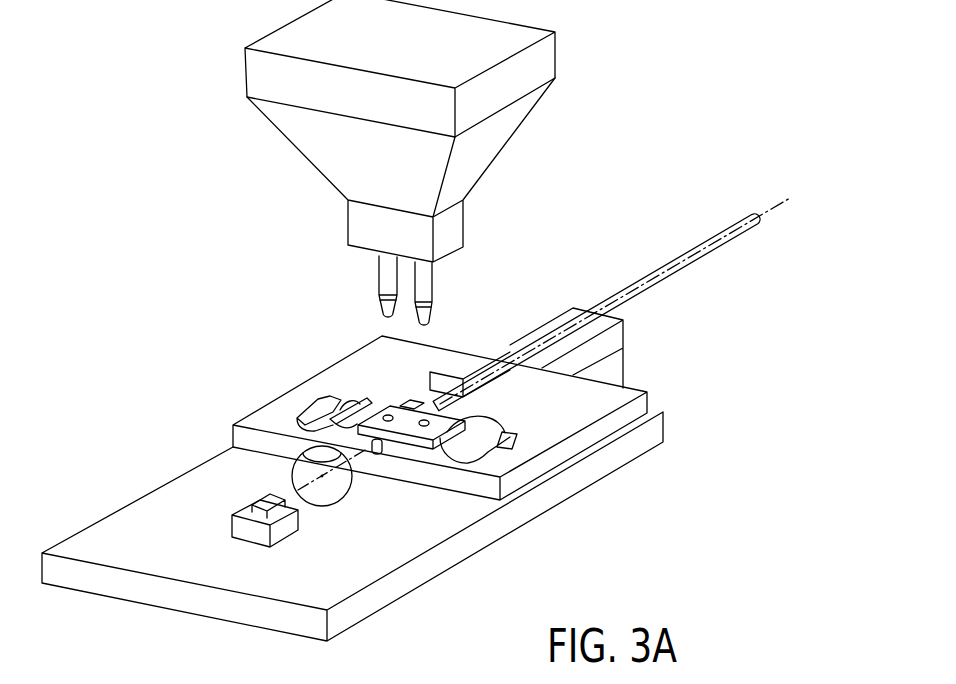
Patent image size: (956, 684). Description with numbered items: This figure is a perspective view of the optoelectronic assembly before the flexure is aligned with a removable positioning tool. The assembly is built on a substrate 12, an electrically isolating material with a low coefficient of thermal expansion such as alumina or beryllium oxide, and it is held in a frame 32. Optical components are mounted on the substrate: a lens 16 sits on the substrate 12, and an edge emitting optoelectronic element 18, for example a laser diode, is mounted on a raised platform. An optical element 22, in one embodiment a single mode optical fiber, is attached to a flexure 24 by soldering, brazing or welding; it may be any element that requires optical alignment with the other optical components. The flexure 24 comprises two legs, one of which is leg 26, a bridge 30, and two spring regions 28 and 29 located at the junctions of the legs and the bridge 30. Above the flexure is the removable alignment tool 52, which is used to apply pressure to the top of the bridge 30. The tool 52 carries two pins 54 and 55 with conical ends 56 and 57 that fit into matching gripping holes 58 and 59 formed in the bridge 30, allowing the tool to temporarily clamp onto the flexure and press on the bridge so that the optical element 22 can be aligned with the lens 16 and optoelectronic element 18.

The substrate 12 is at (603, 463).
The lens 16 is at (327, 497).
The edge emitting optoelectronic element 18 is at (260, 493).
The optical element 22 is at (718, 245).
The flexure 24 is at (405, 447).
The leg 26 is at (330, 410).
The spring region 28 is at (367, 392).
The spring region 29 is at (438, 445).
The bridge 30 is at (410, 408).
The frame 32 is at (620, 397).
The removable alignment tool 52 is at (540, 63).
The pin 54 is at (385, 270).
The pin 55 is at (425, 278).
The conical end 56 is at (433, 310).
The conical end 57 is at (382, 307).
The gripping hole 58 is at (389, 414).
The gripping hole 59 is at (440, 421).